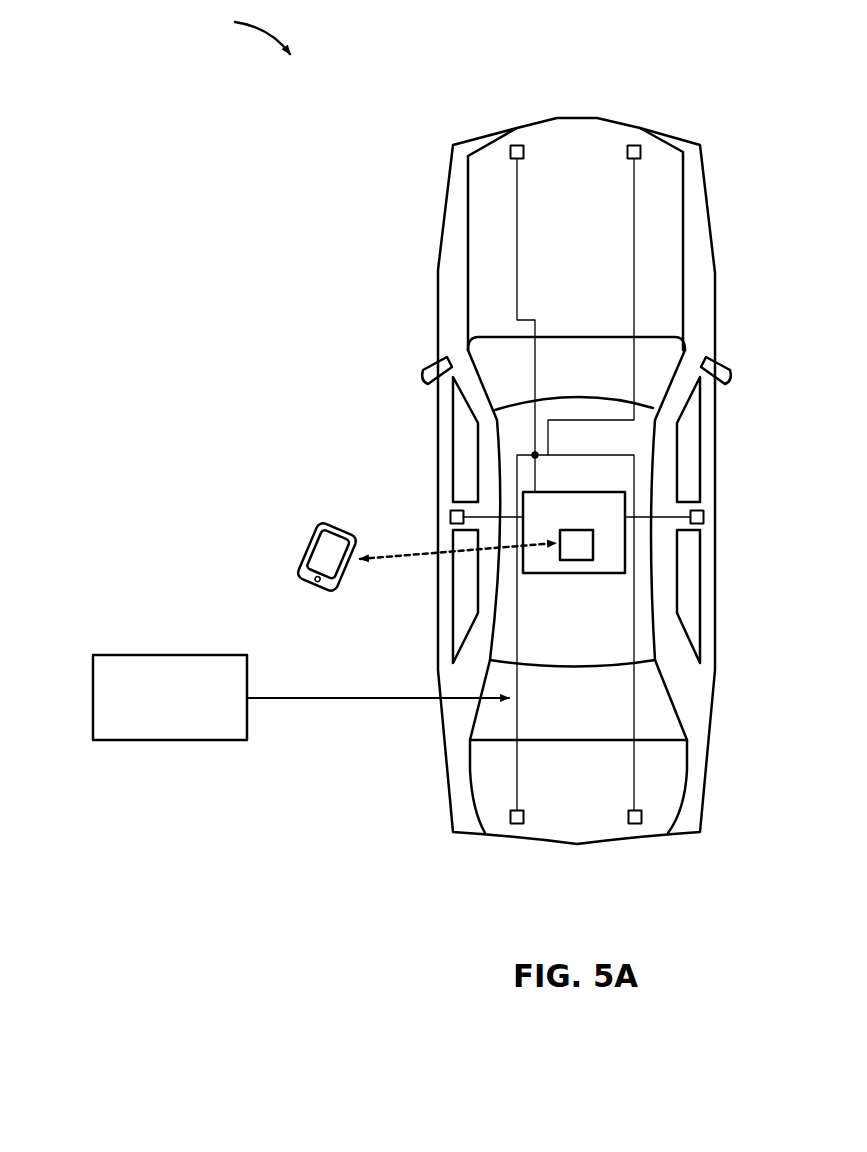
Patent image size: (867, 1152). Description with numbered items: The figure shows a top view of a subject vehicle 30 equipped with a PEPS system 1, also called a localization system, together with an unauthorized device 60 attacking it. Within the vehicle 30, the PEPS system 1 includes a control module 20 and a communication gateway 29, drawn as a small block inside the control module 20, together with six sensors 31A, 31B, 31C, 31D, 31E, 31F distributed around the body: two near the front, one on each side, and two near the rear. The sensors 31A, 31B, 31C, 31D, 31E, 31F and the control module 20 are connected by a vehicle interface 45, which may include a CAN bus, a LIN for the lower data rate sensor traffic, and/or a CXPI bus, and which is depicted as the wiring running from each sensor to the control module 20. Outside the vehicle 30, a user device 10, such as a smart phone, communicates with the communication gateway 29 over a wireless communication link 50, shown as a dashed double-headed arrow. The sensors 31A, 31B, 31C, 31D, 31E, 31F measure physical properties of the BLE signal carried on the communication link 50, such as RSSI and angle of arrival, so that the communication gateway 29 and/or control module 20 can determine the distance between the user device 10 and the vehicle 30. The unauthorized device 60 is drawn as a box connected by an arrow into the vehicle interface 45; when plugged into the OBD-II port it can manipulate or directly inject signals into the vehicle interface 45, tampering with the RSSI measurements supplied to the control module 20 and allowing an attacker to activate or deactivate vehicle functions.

The PEPS system 1 is at (254, 31).
The user device 10 is at (308, 550).
The control module 20 is at (533, 574).
The communication gateway 29 is at (585, 561).
The vehicle 30 is at (703, 178).
The sensor 31A is at (518, 145).
The sensor 31B is at (450, 515).
The sensor 31C is at (516, 824).
The sensor 31D is at (636, 824).
The sensor 31E is at (704, 515).
The sensor 31F is at (636, 145).
The vehicle interface 45 is at (535, 481).
The communication link 50 is at (423, 555).
The unauthorized device 60 is at (93, 655).